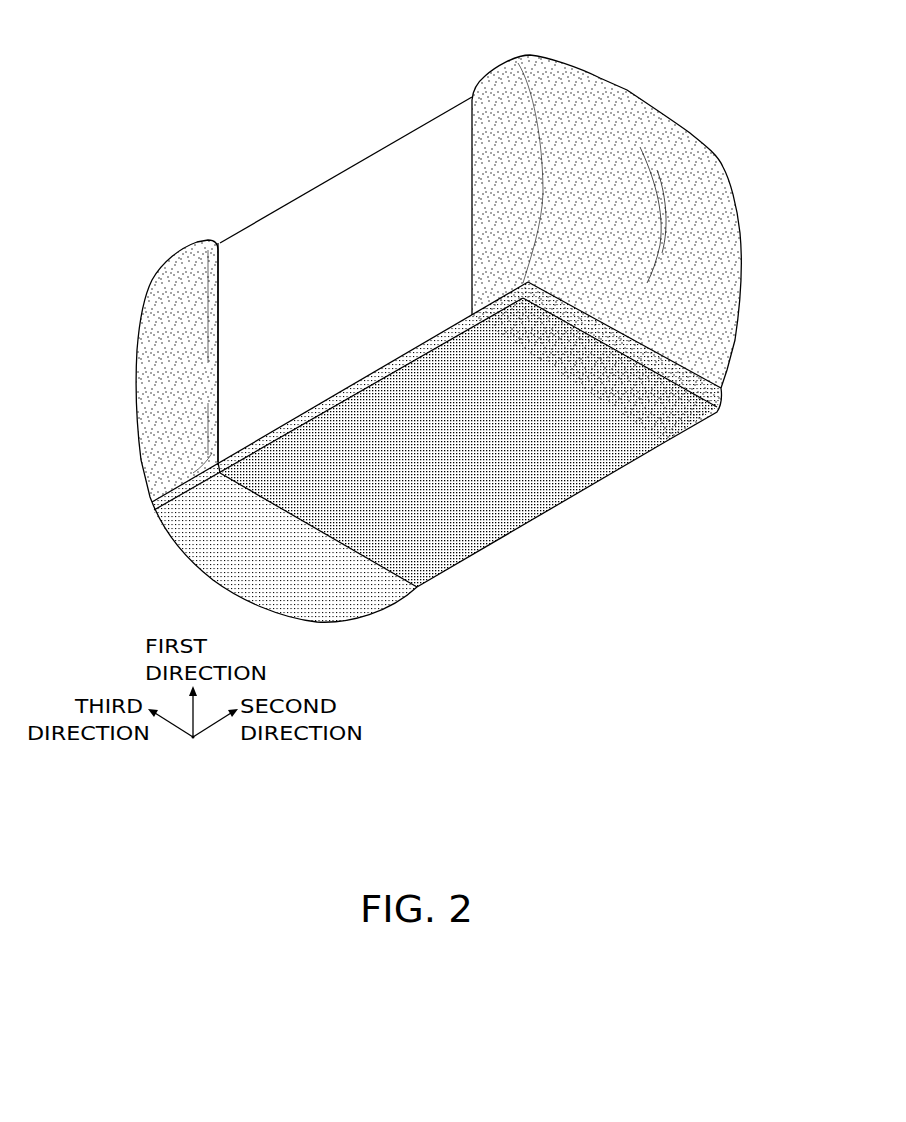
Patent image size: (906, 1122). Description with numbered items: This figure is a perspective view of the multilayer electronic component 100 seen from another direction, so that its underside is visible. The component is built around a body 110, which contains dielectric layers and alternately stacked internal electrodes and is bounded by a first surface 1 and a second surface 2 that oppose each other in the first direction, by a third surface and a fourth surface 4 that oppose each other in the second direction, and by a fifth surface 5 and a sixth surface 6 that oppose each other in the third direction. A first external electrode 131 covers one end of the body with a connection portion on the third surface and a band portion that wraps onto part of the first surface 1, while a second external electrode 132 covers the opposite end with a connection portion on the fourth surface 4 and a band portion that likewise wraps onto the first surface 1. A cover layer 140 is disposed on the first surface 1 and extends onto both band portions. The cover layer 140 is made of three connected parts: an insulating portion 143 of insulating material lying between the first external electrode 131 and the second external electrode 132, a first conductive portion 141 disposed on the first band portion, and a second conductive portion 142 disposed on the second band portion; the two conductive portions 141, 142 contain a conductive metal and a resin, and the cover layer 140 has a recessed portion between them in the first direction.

The multilayer electronic component 100 is at (110, 74).
The body 110 is at (430, 121).
The first surface 1 is at (460, 530).
The second surface 2 is at (356, 153).
The fourth surface 4 is at (713, 216).
The fifth surface 5 is at (598, 473).
The sixth surface 6 is at (279, 237).
The first external electrode 131 is at (147, 334).
The second external electrode 132 is at (627, 88).
The cover layer 140 is at (735, 682).
The first conductive portion 141 is at (365, 578).
The second conductive portion 142 is at (677, 413).
The insulating portion 143 is at (553, 473).